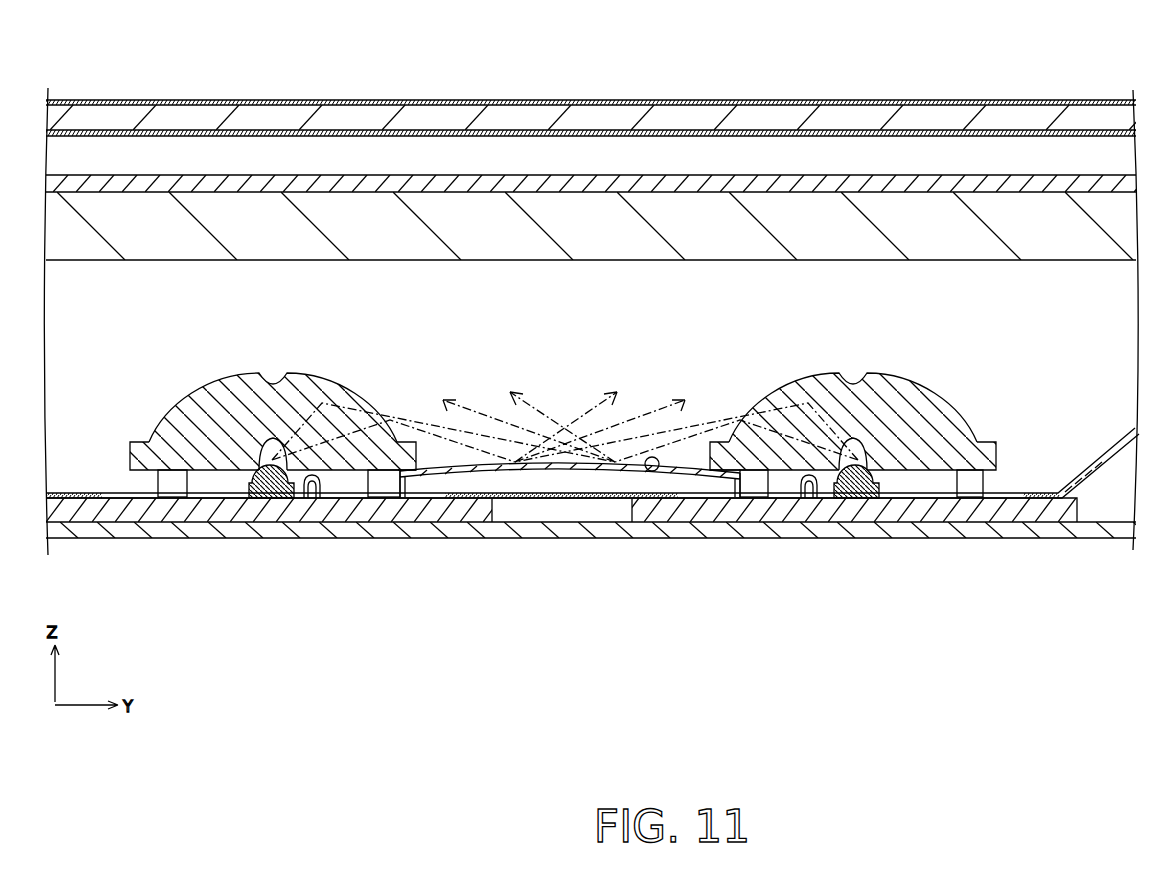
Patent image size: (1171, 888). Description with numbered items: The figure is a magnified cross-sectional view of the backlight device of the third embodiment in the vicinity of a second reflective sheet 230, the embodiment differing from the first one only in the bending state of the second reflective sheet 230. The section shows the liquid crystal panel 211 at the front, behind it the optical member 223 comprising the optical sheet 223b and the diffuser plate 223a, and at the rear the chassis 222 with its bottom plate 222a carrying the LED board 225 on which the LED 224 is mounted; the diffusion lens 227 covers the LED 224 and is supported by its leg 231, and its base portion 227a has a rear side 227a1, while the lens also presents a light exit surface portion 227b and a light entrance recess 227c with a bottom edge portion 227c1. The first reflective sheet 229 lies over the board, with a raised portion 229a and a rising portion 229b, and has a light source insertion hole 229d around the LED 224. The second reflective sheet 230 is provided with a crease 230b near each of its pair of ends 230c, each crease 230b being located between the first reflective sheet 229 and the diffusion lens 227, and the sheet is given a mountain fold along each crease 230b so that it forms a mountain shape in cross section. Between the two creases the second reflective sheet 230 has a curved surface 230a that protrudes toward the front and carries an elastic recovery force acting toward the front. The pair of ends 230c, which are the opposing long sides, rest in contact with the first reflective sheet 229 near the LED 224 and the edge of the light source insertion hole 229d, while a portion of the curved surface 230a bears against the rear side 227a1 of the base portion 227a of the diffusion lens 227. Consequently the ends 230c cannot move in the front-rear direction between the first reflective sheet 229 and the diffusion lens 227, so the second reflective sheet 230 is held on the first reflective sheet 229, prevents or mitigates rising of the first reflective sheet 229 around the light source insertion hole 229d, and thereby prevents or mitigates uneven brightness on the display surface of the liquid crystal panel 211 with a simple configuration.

The liquid crystal panel 211 is at (84, 117).
The chassis 222 is at (591, 584).
The bottom plate of chassis 222a is at (1047, 530).
The optical member 223 is at (591, 133).
The diffuser plate 223a is at (597, 215).
The optical sheet 223b is at (540, 186).
The LED 224 is at (267, 482).
The LED board 225 is at (233, 508).
The diffusion lens 227 is at (565, 311).
The base portion 227a is at (409, 455).
The rear side 227a1 is at (405, 471).
The lens light exit surface portion 227b is at (323, 403).
The lens light entrance recess 227c is at (262, 440).
The lens bottom edge portion 227c1 is at (727, 474).
The first reflective sheet 229 is at (592, 522).
The raised reflection portion 229a is at (540, 498).
The rising portion of reflection sheet 229b is at (1100, 464).
The light source insertion hole 229d is at (103, 496).
The second reflective sheet 230 is at (562, 545).
The curved surface 230a is at (655, 472).
The crease 230b is at (316, 478).
The end 230c is at (309, 486).
The lens leg 231 is at (188, 486).